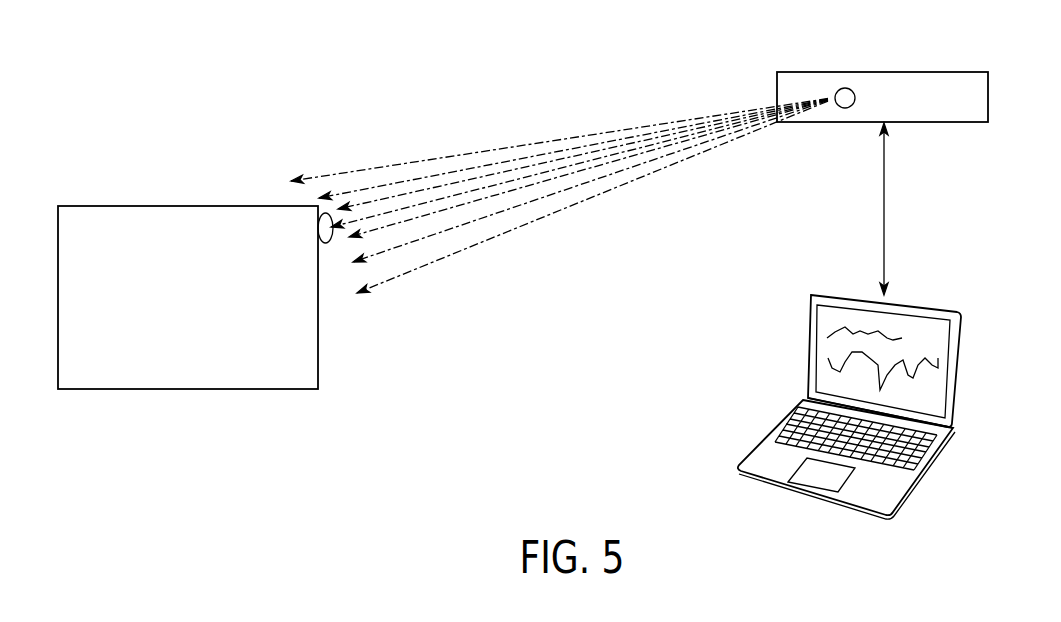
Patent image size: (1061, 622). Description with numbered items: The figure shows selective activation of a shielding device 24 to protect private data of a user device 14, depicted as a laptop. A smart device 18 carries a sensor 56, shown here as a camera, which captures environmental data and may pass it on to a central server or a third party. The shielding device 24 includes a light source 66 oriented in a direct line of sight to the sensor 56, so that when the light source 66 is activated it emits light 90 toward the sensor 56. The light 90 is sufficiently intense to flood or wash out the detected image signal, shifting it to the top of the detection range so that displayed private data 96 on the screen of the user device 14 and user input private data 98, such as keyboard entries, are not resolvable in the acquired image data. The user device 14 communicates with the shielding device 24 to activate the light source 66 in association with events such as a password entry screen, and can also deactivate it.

The user device 14 is at (850, 398).
The smart device 18 is at (187, 389).
The shielding device 24 is at (988, 97).
The sensor 56 is at (324, 243).
The light source 66 is at (855, 94).
The light 90 is at (603, 200).
The displayed private data 96 is at (820, 347).
The user input private data 98 is at (770, 452).